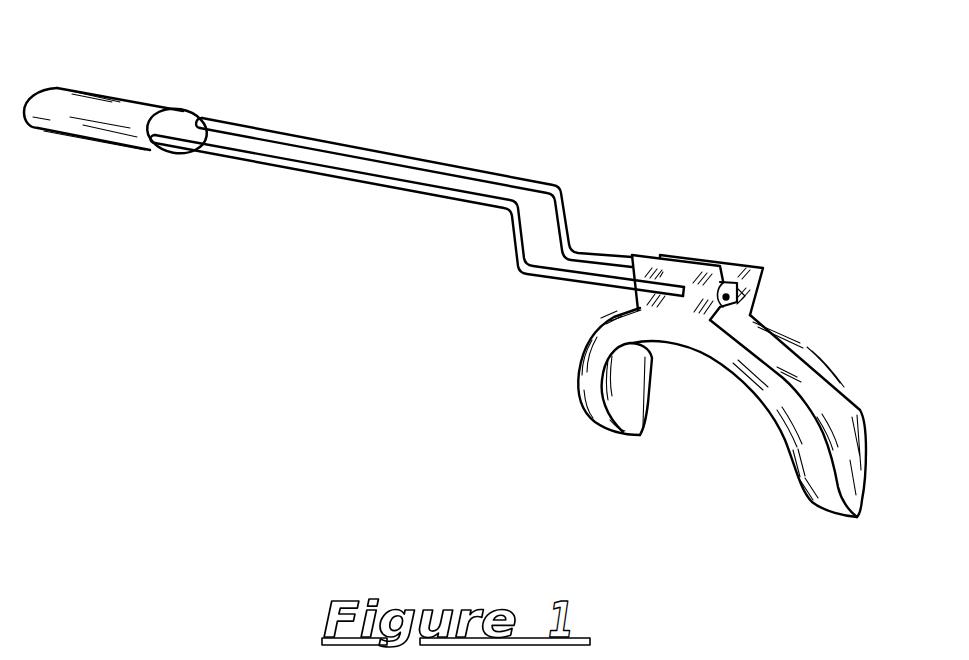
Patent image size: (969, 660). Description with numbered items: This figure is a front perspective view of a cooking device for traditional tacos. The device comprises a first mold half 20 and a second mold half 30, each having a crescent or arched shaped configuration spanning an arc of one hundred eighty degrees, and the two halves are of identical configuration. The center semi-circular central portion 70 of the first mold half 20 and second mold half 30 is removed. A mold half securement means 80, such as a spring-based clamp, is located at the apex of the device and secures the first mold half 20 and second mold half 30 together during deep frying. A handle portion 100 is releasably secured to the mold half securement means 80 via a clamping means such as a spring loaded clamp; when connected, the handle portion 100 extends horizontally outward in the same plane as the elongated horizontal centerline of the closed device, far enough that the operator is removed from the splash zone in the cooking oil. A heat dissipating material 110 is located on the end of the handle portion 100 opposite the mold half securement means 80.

The heat dissipating material 110 is at (108, 92).
The handle portion 100 is at (270, 130).
The mold half securement means 80 is at (727, 280).
The second mold half 30 is at (813, 343).
The first mold half 20 is at (780, 417).
The semi-circular central portion 70 is at (695, 403).